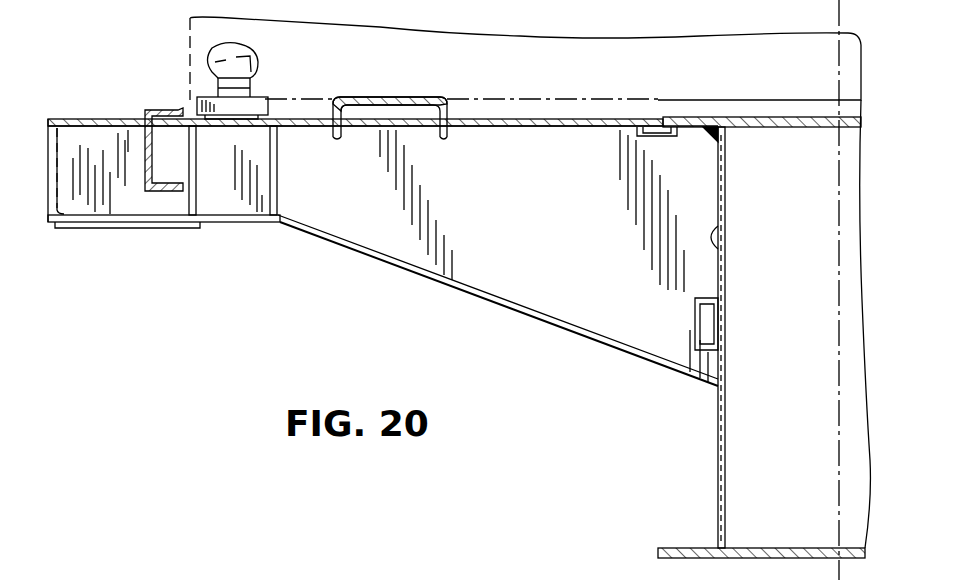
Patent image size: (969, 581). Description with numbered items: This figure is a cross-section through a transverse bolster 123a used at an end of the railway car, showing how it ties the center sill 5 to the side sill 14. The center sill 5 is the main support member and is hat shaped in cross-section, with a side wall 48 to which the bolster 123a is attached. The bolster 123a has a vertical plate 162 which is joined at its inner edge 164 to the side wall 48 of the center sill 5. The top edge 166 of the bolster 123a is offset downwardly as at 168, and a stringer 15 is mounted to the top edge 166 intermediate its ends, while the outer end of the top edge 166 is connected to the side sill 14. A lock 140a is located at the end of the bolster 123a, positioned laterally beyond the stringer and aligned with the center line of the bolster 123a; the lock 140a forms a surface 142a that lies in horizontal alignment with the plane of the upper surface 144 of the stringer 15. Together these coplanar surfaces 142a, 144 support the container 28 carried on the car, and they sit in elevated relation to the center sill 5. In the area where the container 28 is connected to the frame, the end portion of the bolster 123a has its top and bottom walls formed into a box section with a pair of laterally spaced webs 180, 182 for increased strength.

The center sill 5 is at (806, 349).
The side sill 14 is at (146, 116).
The stringer 15 is at (452, 108).
The container 28 is at (617, 72).
The side wall 48 is at (724, 458).
The bolster 123a is at (470, 298).
The lock 140a is at (207, 95).
The surface 142a is at (263, 96).
The upper surface 144 is at (393, 96).
The vertical plate 162 is at (382, 232).
The inner edge 164 is at (727, 223).
The top edge 166 is at (524, 128).
The offset 168 is at (551, 121).
The web 180 is at (194, 190).
The web 182 is at (280, 194).